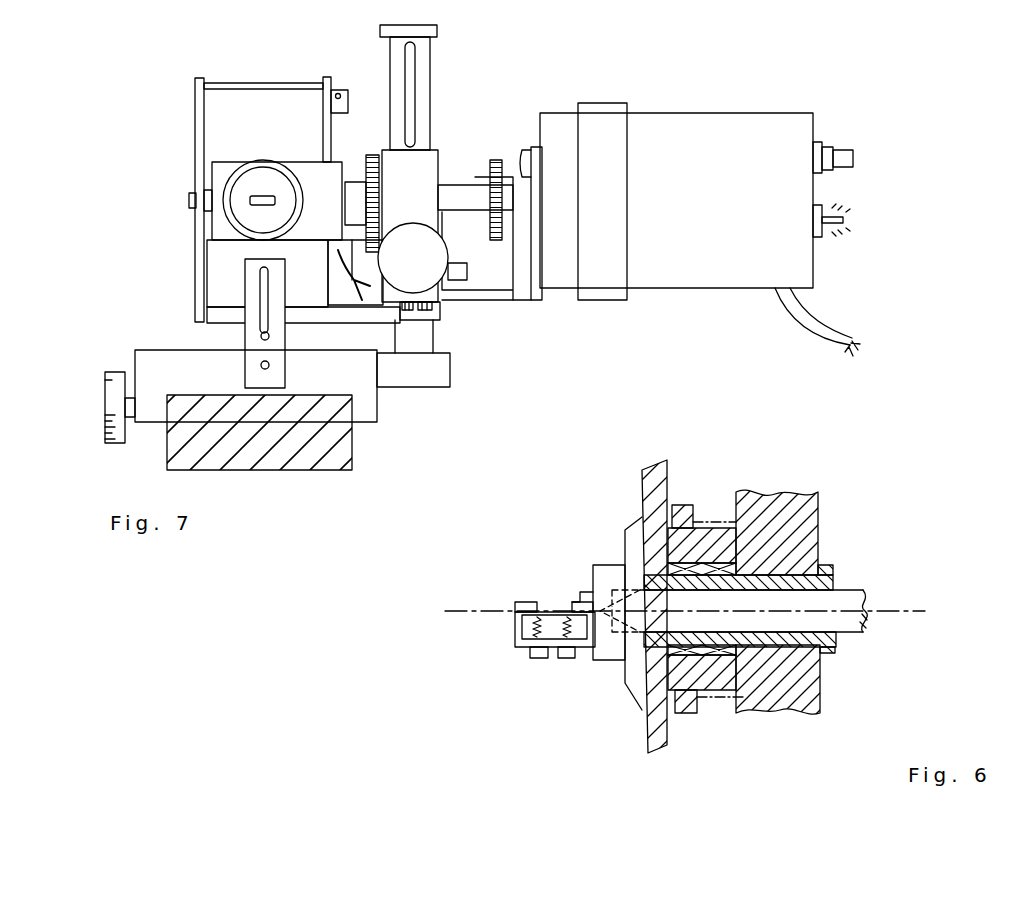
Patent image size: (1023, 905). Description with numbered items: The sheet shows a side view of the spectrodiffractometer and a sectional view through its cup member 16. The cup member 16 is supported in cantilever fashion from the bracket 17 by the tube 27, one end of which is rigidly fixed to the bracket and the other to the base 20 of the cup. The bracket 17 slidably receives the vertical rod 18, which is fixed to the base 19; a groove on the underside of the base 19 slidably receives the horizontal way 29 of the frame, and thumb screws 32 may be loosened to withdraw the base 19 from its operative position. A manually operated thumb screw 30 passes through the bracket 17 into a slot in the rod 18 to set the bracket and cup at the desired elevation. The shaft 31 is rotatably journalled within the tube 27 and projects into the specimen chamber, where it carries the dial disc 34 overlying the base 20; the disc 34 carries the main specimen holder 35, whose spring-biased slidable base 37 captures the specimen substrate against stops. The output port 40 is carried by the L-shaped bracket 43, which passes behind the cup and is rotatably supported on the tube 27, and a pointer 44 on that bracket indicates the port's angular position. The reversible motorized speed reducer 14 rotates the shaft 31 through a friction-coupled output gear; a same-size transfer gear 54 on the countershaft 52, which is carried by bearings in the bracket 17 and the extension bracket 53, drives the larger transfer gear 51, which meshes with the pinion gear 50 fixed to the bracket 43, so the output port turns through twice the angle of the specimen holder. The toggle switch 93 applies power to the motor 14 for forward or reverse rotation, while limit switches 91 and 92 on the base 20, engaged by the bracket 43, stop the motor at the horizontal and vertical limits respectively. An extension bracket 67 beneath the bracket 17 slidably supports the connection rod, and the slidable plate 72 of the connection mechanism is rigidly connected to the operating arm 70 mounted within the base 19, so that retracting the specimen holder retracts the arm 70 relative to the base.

In FIG. 7, the reversible, motorized speed reducer 14 is at (655, 113).
In FIG. 7, the cup member 16 is at (240, 82).
In FIG. 7, the bracket 17 is at (437, 150).
In FIG. 6, the bracket 17 is at (815, 512).
In FIG. 7, the rod 18 is at (423, 336).
In FIG. 7, the base 19 is at (375, 410).
In FIG. 6, the base 20 is at (667, 475).
In FIG. 6, the tube 27 is at (832, 652).
In FIG. 7, the horizontal way 29 is at (348, 452).
In FIG. 7, the thumb screw 30 is at (432, 278).
In FIG. 6, the shaft 31 is at (856, 594).
In FIG. 7, the thumb screws 32 is at (104, 386).
In FIG. 7, the dial disc 34 is at (527, 300).
In FIG. 6, the dial disc 34 is at (632, 680).
In FIG. 6, the main specimen holder 35 is at (513, 650).
In FIG. 6, the slidable base 37 is at (556, 606).
In FIG. 7, the output port 40 is at (228, 232).
In FIG. 7, the L-shaped bracket 43 is at (222, 175).
In FIG. 6, the L-shaped bracket 43 is at (690, 706).
In FIG. 7, the pointer 44 is at (206, 208).
In FIG. 6, the pinion gear 50 is at (722, 702).
In FIG. 7, the transfer gear 51 is at (373, 155).
In FIG. 7, the countershaft 52 is at (450, 204).
In FIG. 7, the extension bracket 53 is at (480, 256).
In FIG. 7, the transfer gear 54 is at (497, 160).
In FIG. 7, the extension bracket 67 is at (326, 317).
In FIG. 7, the operating arm 70 is at (272, 366).
In FIG. 7, the slidable plate 72 is at (252, 336).
In FIG. 7, the limit switch 91 is at (355, 275).
In FIG. 7, the limit switch 92 is at (340, 90).
In FIG. 7, the toggle switch 93 is at (852, 221).